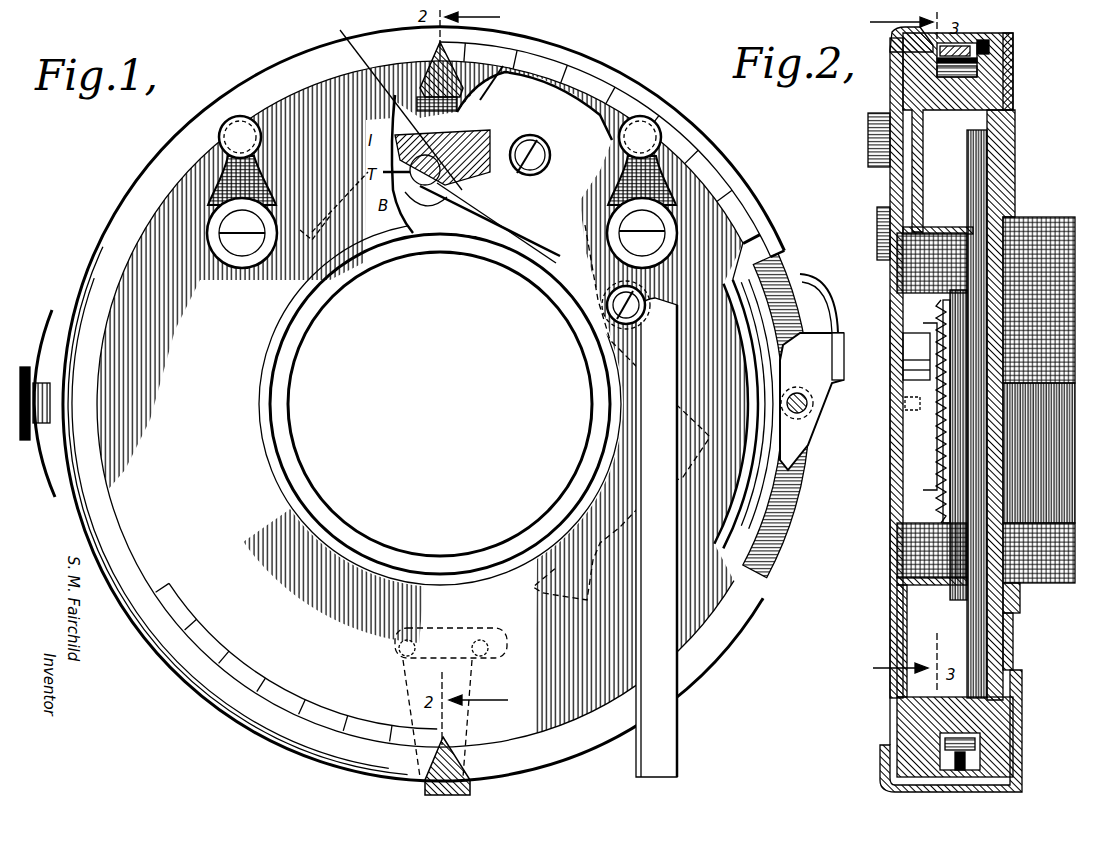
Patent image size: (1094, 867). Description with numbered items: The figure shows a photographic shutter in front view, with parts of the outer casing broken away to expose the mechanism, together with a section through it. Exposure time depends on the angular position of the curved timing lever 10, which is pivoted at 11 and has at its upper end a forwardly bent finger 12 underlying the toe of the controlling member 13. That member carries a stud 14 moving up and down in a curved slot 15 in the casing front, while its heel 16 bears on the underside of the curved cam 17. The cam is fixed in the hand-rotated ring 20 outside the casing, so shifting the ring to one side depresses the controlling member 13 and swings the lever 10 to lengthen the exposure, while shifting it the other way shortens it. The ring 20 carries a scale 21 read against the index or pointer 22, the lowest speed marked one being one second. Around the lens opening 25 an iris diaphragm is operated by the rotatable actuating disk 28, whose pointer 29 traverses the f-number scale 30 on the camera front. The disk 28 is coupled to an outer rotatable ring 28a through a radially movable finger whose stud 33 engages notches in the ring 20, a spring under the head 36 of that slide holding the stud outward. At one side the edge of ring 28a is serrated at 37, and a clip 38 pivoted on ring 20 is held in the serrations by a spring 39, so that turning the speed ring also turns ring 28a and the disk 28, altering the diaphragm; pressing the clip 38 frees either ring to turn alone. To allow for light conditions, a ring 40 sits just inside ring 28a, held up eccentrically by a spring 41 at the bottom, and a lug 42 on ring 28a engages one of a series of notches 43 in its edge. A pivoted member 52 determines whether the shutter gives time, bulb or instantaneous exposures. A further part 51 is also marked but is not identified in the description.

In FIG. 1, the curved timing member or lever 10 is at (575, 478).
In FIG. 1, the pivot 11 is at (585, 283).
In FIG. 1, the forwardly bent finger 12 is at (415, 246).
In FIG. 1, the controlling member 13 is at (680, 740).
In FIG. 1, the stud 14 is at (606, 318).
In FIG. 1, the curved slot 15 is at (606, 394).
In FIG. 1, the heel 16 is at (387, 103).
In FIG. 1, the curved cam 17 is at (541, 134).
In FIG. 1, the ring 20 is at (278, 75).
In FIG. 2, the ring 20 is at (895, 49).
In FIG. 1, the scale 21 is at (576, 58).
In FIG. 1, the index or pointer 22 is at (430, 56).
In FIG. 2, the index or pointer 22 is at (890, 82).
In FIG. 1, the lens opening 25 is at (437, 401).
In FIG. 1, the rotatable actuating disk 28 is at (476, 763).
In FIG. 2, the rotatable actuating disk 28 is at (1012, 642).
In FIG. 2, the rotatable ring 28a is at (1015, 56).
In FIG. 2, the pointer 29 is at (1012, 672).
In FIG. 1, the scale 30 is at (297, 662).
In FIG. 1, the stud 33 is at (27, 403).
In FIG. 1, the head 36 is at (838, 356).
In FIG. 2, the head 36 is at (903, 352).
In FIG. 1, the serrations 37 is at (800, 512).
In FIG. 2, the serrations 37 is at (943, 503).
In FIG. 1, the clip 38 is at (808, 442).
In FIG. 1, the spring 39 is at (822, 312).
In FIG. 1, the ring 40 is at (768, 532).
In FIG. 2, the ring 40 is at (960, 48).
In FIG. 2, the spring 41 is at (978, 766).
In FIG. 2, the lug 42 is at (1013, 37).
In FIG. 1, the notches 43 is at (334, 206).
In FIG. 1, the ring 51 is at (383, 232).
In FIG. 1, the pivoted member 52 is at (515, 105).